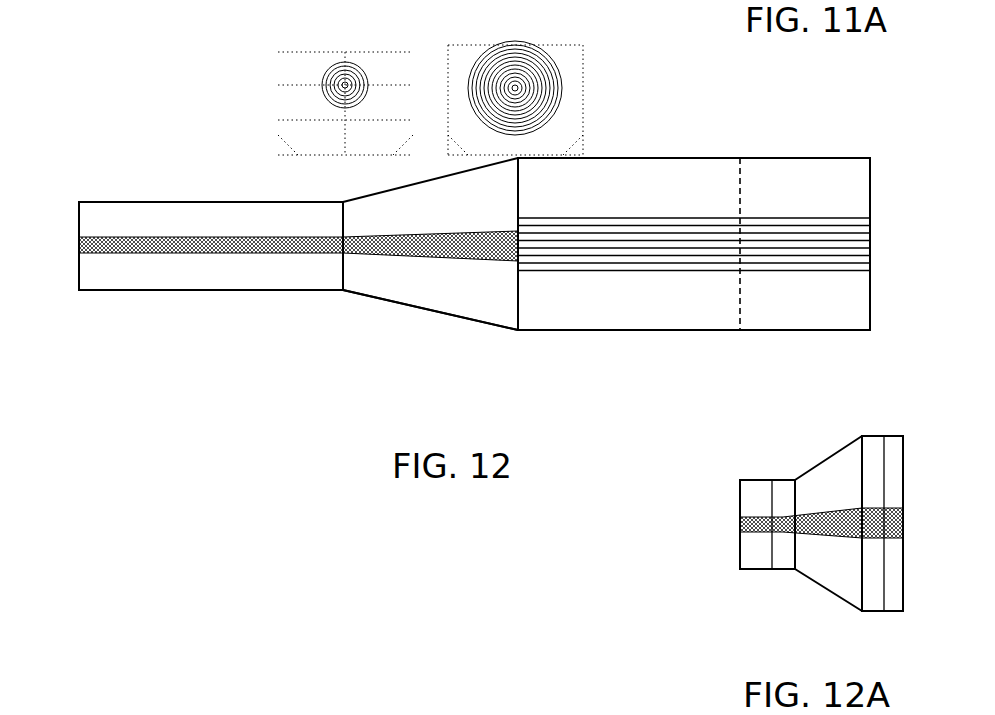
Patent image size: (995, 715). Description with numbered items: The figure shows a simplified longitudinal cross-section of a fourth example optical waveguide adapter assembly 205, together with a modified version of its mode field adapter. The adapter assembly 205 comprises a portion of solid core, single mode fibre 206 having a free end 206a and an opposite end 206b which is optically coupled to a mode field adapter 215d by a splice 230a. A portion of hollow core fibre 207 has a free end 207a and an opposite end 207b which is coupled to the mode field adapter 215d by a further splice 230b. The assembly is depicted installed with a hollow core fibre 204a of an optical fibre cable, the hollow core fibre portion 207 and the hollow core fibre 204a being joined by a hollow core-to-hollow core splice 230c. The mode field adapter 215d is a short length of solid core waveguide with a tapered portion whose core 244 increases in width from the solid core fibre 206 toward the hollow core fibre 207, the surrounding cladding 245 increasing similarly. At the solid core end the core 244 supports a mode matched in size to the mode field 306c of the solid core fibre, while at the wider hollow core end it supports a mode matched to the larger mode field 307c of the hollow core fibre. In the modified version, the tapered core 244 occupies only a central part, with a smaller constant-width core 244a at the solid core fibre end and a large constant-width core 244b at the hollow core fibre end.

In FIG. 12, the adapter assembly 205 is at (143, 93).
In FIG. 12, the mode field of the solid core fibre portion 306c is at (320, 75).
In FIG. 12, the mode field of the hollow core fibre portion 307c is at (545, 64).
In FIG. 12, the splice 230a is at (342, 201).
In FIG. 12, the further splice 230b is at (518, 158).
In FIG. 12, the hollow core-to-hollow core splice 230c is at (741, 158).
In FIG. 12, the solid core, single mode fibre 206 is at (180, 291).
In FIG. 12, the free end 206a is at (79, 291).
In FIG. 12, the opposite end 206b is at (343, 292).
In FIG. 12, the mode field adapter 215d is at (375, 298).
In FIG. 12A, the mode field adapter 215d is at (812, 588).
In FIG. 12, the cladding 245 is at (432, 314).
In FIG. 12, the core 244 is at (448, 258).
In FIG. 12A, the core 244 is at (828, 509).
In FIG. 12, the hollow core fibre 207 is at (632, 331).
In FIG. 12, the free end 207a is at (740, 331).
In FIG. 12, the opposite end 207b is at (518, 331).
In FIG. 12, the hollow core fibre 204a is at (835, 331).
In FIG. 12A, the smaller core 244a is at (753, 534).
In FIG. 12A, the large core 244b is at (893, 540).